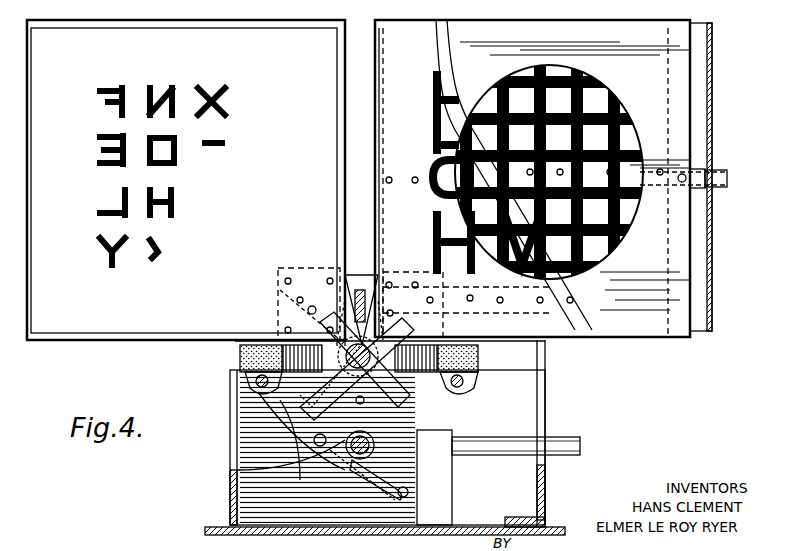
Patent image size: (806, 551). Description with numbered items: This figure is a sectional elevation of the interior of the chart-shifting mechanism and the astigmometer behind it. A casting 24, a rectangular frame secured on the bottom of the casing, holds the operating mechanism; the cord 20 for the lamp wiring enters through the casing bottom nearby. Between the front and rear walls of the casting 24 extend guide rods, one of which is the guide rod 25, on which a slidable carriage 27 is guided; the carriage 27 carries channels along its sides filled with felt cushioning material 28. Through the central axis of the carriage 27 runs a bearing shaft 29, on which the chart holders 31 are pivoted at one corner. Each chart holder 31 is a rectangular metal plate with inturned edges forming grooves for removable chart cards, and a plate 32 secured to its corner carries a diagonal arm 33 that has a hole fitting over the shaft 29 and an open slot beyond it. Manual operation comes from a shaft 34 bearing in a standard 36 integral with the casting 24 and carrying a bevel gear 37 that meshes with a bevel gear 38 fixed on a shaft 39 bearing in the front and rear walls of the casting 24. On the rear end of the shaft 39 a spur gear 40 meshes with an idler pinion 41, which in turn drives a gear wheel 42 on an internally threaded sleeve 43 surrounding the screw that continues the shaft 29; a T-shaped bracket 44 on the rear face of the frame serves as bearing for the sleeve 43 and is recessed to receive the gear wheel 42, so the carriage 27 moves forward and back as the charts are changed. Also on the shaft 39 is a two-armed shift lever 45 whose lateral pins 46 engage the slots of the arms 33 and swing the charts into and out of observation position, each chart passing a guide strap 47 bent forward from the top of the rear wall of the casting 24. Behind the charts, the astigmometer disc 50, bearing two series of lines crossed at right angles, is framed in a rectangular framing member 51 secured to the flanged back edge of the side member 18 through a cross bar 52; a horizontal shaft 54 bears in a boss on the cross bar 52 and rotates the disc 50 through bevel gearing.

The side member 18 is at (712, 290).
The cord 20 is at (387, 433).
The casting 24 is at (546, 488).
The guide rod 25 is at (476, 388).
The carriage 27 is at (478, 360).
The cushioning material 28 is at (258, 344).
The bearing shaft 29 is at (390, 340).
The chart holders 31 is at (165, 290).
The plate 32 is at (305, 272).
The arm 33 is at (266, 388).
The shaft 34 is at (560, 438).
The standard 36 is at (452, 470).
The bevel gear 37 is at (388, 432).
The bevel gear 38 is at (365, 472).
The shaft 39 is at (305, 470).
The spur gear 40 is at (338, 476).
The idler pinion 41 is at (404, 402).
The gear wheel 42 is at (310, 315).
The sleeve 43 is at (398, 496).
The T-shaped bracket 44 is at (405, 380).
The shift lever 45 is at (295, 440).
The lateral pin 46 is at (300, 430).
The guide strap 47 is at (360, 302).
The disc 50 is at (614, 98).
The framing member 51 is at (600, 290).
The cross bar 52 is at (700, 186).
The horizontal shaft 54 is at (727, 180).